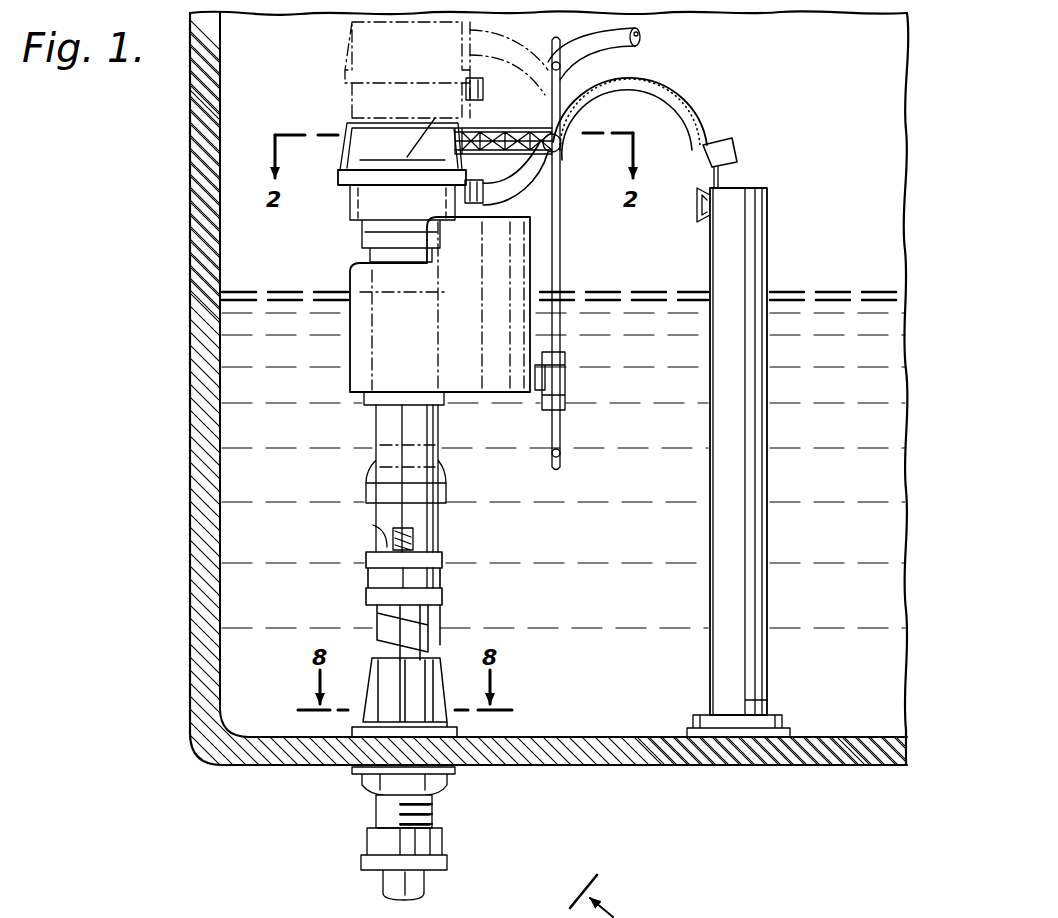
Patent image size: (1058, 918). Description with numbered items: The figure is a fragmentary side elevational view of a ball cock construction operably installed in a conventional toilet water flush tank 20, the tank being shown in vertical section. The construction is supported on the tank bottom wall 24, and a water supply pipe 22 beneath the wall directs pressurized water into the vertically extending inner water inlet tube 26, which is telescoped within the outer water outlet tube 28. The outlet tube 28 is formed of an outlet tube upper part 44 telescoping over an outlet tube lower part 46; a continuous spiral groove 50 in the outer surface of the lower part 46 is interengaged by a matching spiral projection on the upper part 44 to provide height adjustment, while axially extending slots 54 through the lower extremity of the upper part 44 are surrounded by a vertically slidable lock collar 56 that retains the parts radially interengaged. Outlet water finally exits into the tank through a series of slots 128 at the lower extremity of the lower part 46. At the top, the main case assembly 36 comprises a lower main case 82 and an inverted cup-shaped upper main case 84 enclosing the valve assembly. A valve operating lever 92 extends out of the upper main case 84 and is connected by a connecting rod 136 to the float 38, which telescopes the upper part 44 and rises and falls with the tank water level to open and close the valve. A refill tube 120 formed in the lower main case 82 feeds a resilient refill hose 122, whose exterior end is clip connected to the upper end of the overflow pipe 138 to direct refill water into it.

The toilet water flush tank 20 is at (188, 126).
The water supply pipe 22 is at (385, 886).
The tank bottom wall 24 is at (313, 767).
The inner water inlet tube 26 is at (441, 805).
The outer water outlet tube 28 is at (436, 640).
The main case assembly 36 is at (338, 181).
The float 38 is at (348, 378).
The outlet tube upper part 44 is at (380, 433).
The outlet tube lower part 46 is at (383, 620).
The spiral groove 50 is at (378, 645).
The axially extending slots 54 is at (375, 540).
The lock collar 56 is at (445, 490).
The lower main case 82 is at (363, 210).
The upper main case 84 is at (352, 140).
The valve operating lever 92 is at (513, 131).
The refill tube 120 is at (505, 196).
The refill hose 122 is at (708, 112).
The slots 128 is at (385, 712).
The connecting rod 136 is at (560, 182).
The overflow pipe 138 is at (768, 246).